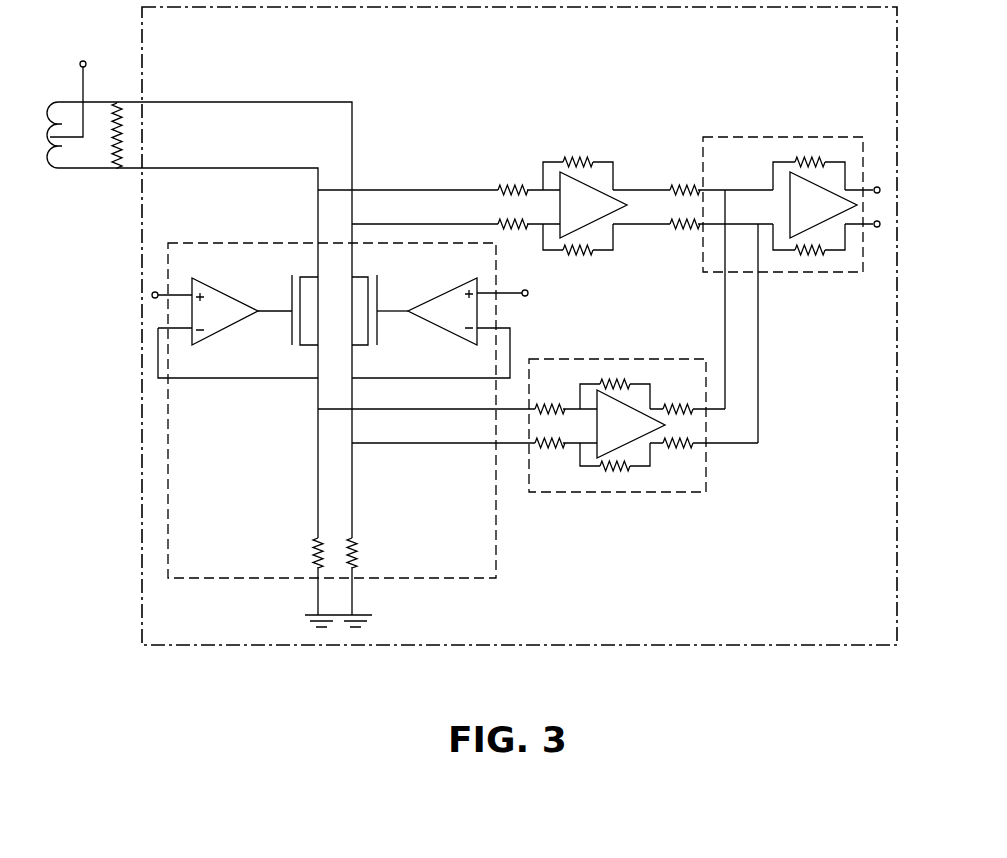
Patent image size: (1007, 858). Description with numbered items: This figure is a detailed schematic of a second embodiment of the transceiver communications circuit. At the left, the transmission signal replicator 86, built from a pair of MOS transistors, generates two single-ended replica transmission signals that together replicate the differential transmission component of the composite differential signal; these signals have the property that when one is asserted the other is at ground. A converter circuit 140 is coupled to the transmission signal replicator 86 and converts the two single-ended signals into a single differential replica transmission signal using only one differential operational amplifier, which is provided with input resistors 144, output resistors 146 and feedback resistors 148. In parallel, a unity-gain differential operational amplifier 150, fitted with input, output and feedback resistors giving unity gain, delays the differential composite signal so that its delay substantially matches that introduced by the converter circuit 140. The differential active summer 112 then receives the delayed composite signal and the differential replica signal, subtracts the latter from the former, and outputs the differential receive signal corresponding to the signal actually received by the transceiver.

The transmission signal replicator 86 is at (212, 241).
The differential active summer 112 is at (766, 136).
The converter circuit 140 is at (596, 357).
The input resistors 144 is at (551, 403).
The output resistors 146 is at (677, 403).
The feedback resistors 148 is at (617, 379).
The unity-gain differential operational amplifier 150 is at (617, 210).